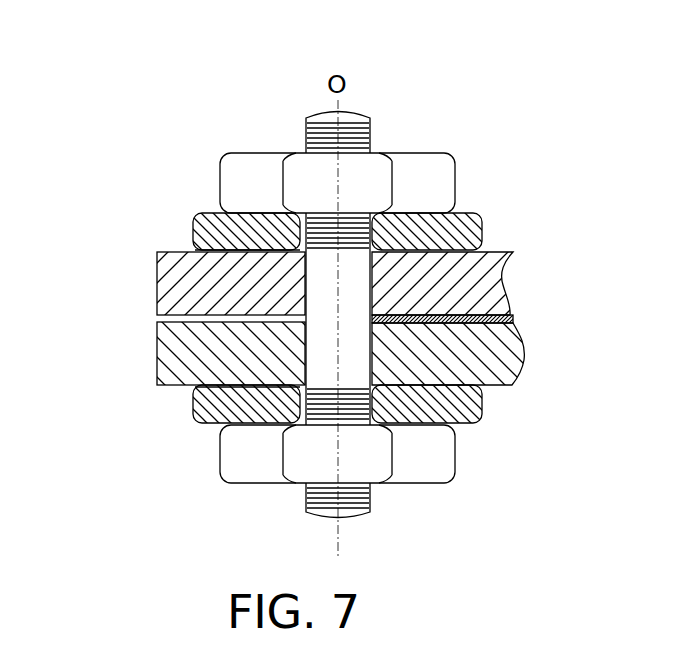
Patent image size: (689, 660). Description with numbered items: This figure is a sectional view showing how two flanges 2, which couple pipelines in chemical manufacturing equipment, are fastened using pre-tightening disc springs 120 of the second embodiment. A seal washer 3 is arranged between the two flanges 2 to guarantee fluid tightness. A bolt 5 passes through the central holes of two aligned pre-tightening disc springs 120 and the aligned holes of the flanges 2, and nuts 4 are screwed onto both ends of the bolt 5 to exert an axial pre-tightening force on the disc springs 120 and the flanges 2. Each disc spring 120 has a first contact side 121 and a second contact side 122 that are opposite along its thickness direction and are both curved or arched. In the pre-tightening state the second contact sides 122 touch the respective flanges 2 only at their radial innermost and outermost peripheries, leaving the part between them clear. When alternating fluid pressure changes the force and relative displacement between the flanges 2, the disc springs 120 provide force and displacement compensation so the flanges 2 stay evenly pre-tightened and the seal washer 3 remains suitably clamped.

The flange 2 is at (489, 294).
The seal washer 3 is at (514, 319).
The nut 4 is at (366, 181).
The bolt 5 is at (341, 131).
The pre-tightening disc spring 120 is at (466, 233).
The first contact side 121 is at (218, 216).
The second contact side 122 is at (217, 252).